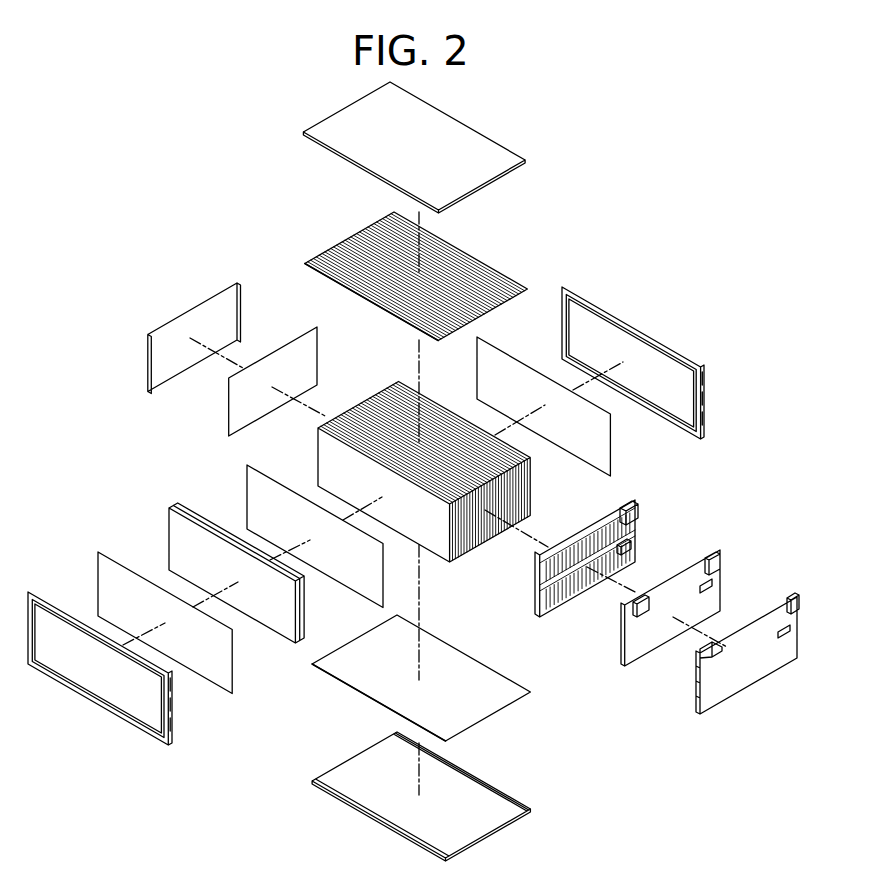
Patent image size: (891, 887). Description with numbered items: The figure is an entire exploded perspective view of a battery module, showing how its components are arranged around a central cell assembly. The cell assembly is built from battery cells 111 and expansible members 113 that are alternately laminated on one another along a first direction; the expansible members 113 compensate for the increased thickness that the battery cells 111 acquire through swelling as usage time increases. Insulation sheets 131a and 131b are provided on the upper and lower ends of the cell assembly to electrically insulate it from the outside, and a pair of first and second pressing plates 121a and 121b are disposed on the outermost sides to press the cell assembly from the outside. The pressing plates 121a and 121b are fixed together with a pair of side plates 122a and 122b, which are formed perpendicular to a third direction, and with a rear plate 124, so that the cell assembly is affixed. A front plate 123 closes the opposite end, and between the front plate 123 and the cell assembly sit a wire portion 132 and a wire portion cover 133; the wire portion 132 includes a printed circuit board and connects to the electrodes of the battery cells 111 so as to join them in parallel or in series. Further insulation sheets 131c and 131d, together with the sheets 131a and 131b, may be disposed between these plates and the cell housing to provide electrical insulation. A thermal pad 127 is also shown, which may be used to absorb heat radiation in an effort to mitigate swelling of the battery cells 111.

The battery cell 111 is at (169, 543).
The expansible member 113 is at (250, 497).
The first pressing plate 121a is at (112, 705).
The second pressing plate 121b is at (668, 350).
The side plate 122a is at (480, 142).
The side plate 122b is at (365, 813).
The front plate 123 is at (797, 637).
The rear plate 124 is at (150, 358).
The thermal pad 127 is at (493, 708).
The insulation sheet 131a is at (100, 578).
The insulation sheet 131b is at (607, 447).
The insulation sheet 131c is at (232, 403).
The insulation sheet 131d is at (493, 272).
The wire portion 132 is at (633, 537).
The wire portion cover 133 is at (715, 590).